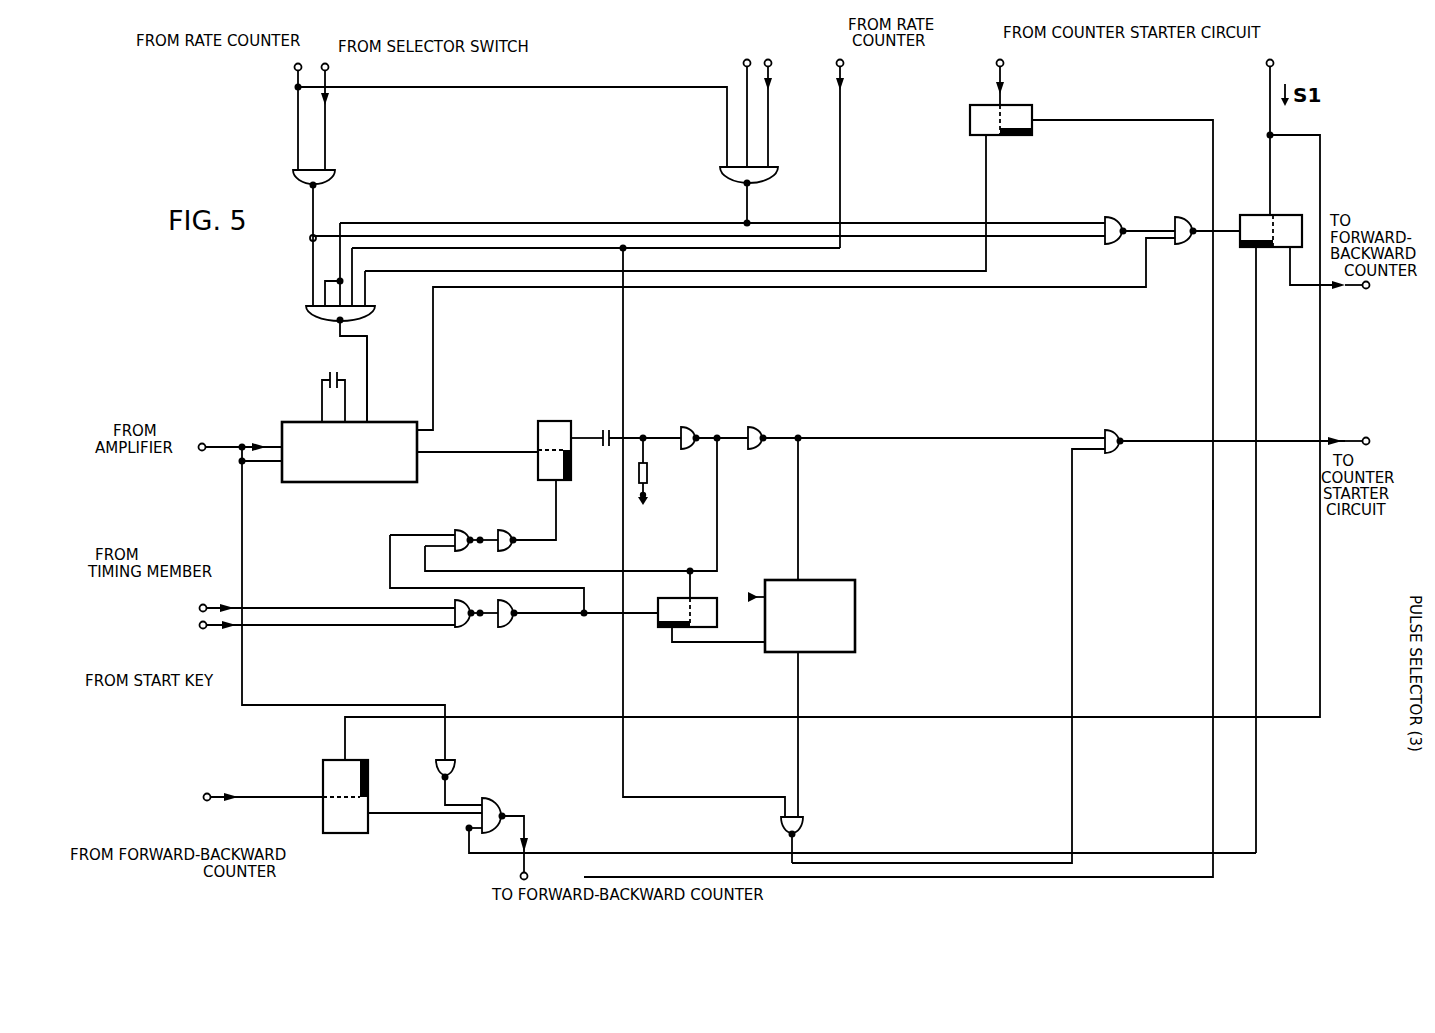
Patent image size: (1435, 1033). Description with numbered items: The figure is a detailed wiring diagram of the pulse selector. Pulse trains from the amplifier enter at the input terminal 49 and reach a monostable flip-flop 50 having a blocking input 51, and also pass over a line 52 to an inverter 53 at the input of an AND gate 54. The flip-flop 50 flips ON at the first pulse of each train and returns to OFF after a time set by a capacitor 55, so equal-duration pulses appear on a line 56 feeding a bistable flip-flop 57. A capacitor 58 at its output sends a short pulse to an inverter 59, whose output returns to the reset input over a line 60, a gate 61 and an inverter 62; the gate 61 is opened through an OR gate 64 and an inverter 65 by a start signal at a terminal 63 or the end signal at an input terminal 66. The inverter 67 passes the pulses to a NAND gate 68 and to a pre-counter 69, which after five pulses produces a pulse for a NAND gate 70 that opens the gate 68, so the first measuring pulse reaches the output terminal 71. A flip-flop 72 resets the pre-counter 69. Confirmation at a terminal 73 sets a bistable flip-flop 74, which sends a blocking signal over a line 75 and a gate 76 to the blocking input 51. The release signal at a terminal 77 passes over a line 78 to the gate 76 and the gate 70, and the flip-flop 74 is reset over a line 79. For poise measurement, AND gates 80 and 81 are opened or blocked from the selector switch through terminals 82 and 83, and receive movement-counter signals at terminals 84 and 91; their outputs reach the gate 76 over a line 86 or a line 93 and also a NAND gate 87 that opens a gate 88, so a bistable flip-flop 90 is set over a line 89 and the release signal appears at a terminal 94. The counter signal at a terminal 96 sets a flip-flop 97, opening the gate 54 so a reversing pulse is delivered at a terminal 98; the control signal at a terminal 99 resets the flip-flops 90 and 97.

The input terminal 49 is at (204, 452).
The monostable flip-flop 50 is at (340, 483).
The blocking input 51 is at (370, 418).
The line 52 is at (244, 588).
The inverter 53 is at (452, 765).
The AND gate 54 is at (493, 808).
The capacitor 55 is at (320, 379).
The line 56 is at (464, 456).
The bistable flip-flop 57 is at (548, 420).
The capacitor 58 is at (600, 426).
The inverter 59 is at (688, 424).
The line 60 is at (597, 568).
The gate 61 is at (462, 528).
The inverter 62 is at (506, 520).
The terminal 63 is at (204, 629).
The OR gate 64 is at (460, 630).
The inverter 65 is at (504, 630).
The input terminal 66 is at (204, 603).
The inverter 67 is at (755, 424).
The NAND gate 68 is at (1110, 428).
The pre-counter 69 is at (856, 646).
The NAND gate 70 is at (804, 822).
The output terminal 71 is at (1364, 437).
The flip-flop 72 is at (664, 630).
The terminal 73 is at (1038, 78).
The bistable flip-flop 74 is at (970, 120).
The line 75 is at (987, 208).
The gate 76 is at (370, 314).
The terminal 77 is at (878, 149).
The line 78 is at (812, 245).
The line 79 is at (1213, 505).
The AND gate 80 is at (330, 180).
The AND gate 81 is at (762, 175).
The terminal 82 is at (364, 112).
The terminal 83 is at (803, 109).
The terminal 84 is at (476, 112).
The line 86 is at (512, 223).
The NAND gate 87 is at (1112, 218).
The gate 88 is at (1182, 218).
The line 89 is at (868, 290).
The bistable flip-flop 90 is at (1288, 228).
The terminal 91 is at (711, 109).
The line 93 is at (892, 224).
The terminal 94 is at (1362, 290).
The terminal 96 is at (207, 801).
The flip-flop 97 is at (343, 830).
The terminal 98 is at (563, 875).
The terminal 99 is at (849, 405).